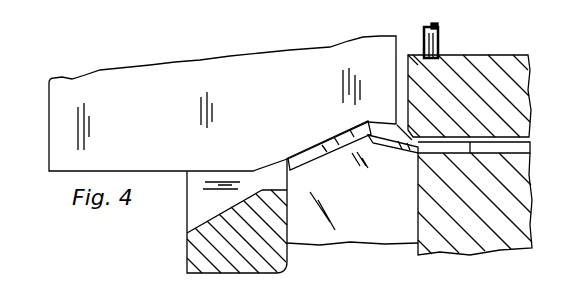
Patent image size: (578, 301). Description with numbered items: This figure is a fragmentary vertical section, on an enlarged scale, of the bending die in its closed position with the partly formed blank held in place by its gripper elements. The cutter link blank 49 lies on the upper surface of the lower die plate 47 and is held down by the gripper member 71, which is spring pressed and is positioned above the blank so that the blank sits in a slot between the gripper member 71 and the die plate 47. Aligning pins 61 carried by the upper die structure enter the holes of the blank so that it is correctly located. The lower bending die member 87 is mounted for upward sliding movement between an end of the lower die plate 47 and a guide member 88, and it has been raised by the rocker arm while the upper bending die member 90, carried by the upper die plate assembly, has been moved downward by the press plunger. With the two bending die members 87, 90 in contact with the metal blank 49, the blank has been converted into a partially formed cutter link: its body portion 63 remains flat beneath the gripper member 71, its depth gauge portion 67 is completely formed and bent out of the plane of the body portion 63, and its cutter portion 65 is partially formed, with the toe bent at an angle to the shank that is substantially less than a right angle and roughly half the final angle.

The upper bending die member 90 is at (366, 53).
The guide member 88 is at (255, 260).
The cutter portion 65 is at (342, 133).
The depth gauge portion 67 is at (388, 150).
The cutter link blank 49 is at (421, 149).
The gripper member 71 is at (496, 71).
The aligning pins 61 is at (439, 38).
The body portion 63 is at (474, 146).
The lower die plate 47 is at (508, 188).
The lower bending die member 87 is at (386, 236).